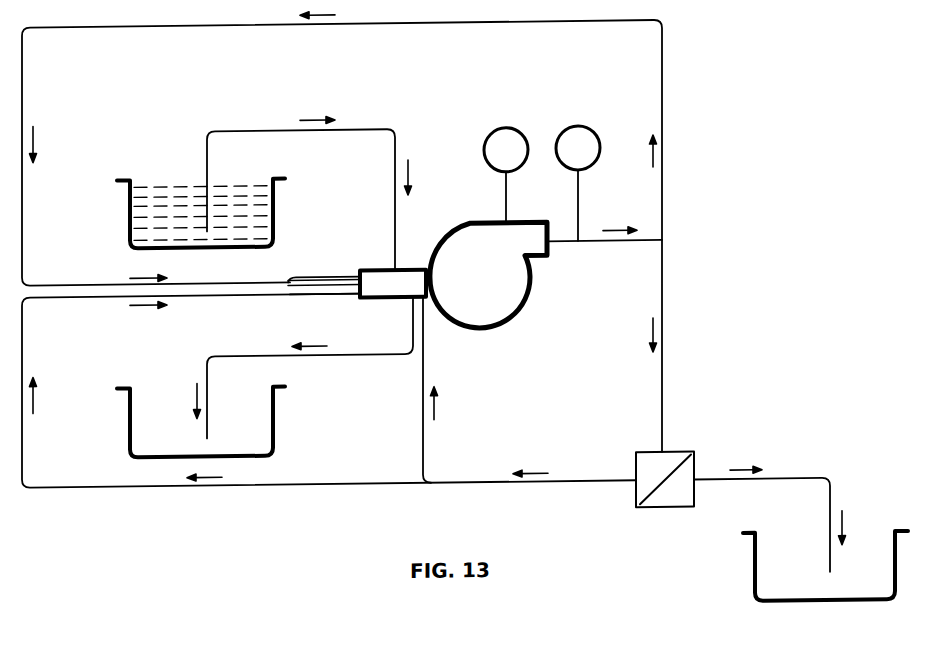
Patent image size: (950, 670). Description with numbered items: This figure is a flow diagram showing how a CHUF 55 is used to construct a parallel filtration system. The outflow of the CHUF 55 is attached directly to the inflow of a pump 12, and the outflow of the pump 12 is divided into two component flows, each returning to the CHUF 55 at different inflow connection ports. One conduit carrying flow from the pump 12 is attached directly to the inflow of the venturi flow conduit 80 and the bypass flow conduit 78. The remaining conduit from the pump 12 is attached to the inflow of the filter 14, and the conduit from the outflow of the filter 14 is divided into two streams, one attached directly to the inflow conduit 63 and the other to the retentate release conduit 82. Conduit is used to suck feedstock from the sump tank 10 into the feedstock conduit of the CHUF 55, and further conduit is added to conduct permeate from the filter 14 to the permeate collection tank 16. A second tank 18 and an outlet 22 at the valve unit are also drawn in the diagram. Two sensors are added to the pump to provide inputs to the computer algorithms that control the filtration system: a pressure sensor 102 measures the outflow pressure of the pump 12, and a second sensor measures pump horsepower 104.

The sump tank 10 is at (128, 202).
The pump 12 is at (523, 313).
The filter 14 is at (693, 460).
The permeate collection tank 16 is at (752, 579).
The second tank 18 is at (174, 423).
The valve outlet line 22 is at (410, 303).
The CHUF 55 is at (377, 273).
The inflow conduit 63 is at (422, 318).
The bypass flow conduit 78 is at (305, 291).
The venturi flow conduit 80 is at (345, 278).
The retentate release conduit 82 is at (335, 301).
The pressure sensor 102 is at (589, 135).
The pump horsepower sensor 104 is at (497, 136).